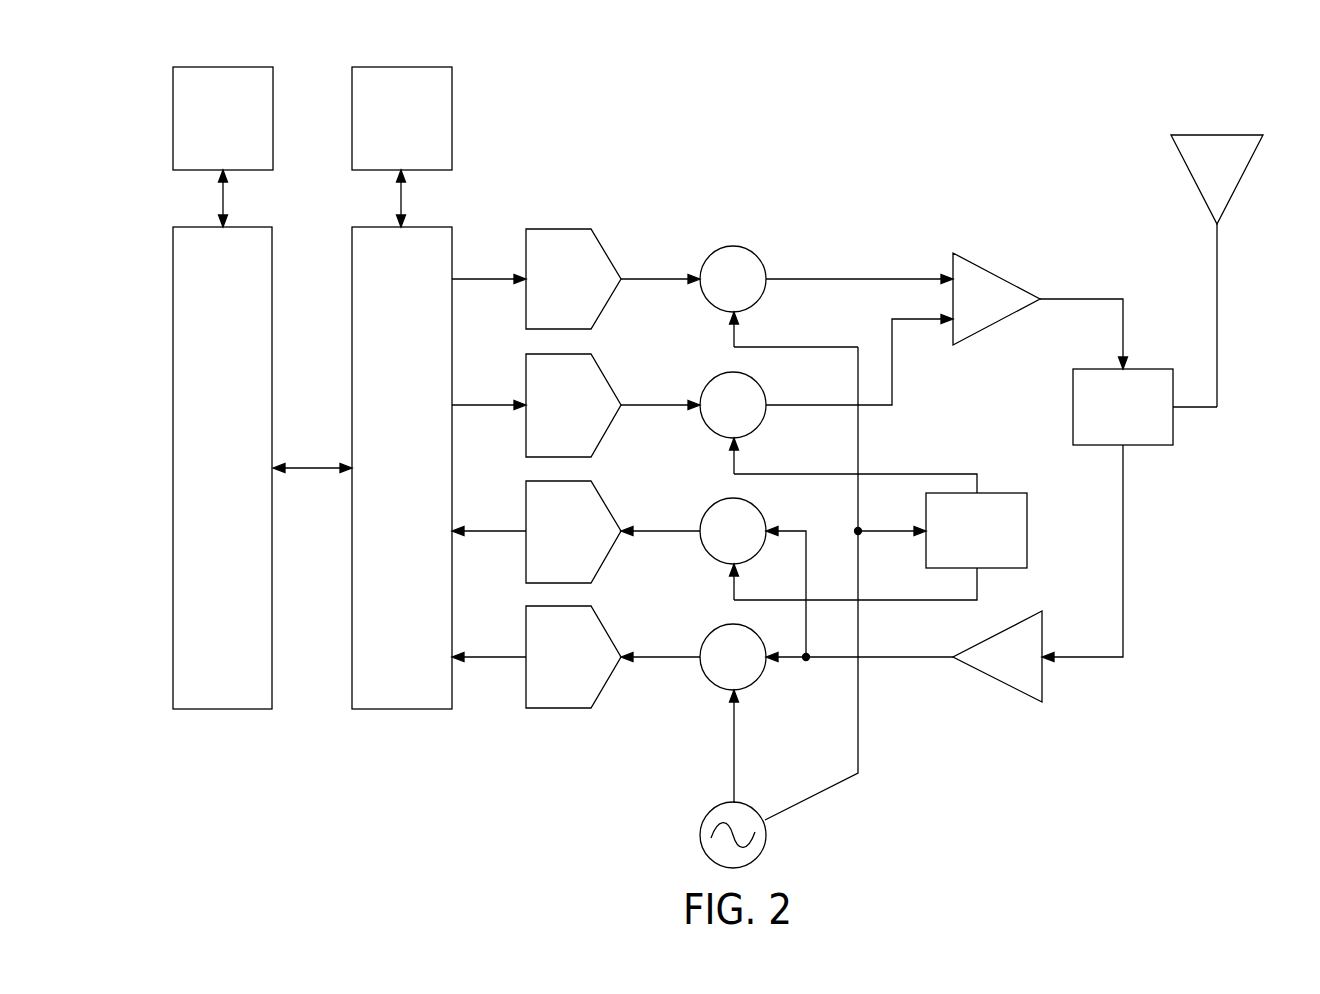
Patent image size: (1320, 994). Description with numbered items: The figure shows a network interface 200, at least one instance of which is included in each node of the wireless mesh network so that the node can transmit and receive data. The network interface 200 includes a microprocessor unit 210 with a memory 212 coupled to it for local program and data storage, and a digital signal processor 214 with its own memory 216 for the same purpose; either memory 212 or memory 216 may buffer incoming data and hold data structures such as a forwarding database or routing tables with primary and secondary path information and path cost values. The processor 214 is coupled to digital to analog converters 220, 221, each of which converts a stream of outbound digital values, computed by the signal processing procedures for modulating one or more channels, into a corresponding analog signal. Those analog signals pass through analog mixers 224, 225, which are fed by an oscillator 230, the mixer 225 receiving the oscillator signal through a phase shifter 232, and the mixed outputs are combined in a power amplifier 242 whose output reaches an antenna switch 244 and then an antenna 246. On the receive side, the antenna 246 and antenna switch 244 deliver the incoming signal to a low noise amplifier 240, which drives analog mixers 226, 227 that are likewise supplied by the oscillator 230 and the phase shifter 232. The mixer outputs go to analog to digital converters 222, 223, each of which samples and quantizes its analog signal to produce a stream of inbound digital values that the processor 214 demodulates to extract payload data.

The network interface 200 is at (1005, 112).
The microprocessor unit 210 is at (240, 497).
The memory 212 is at (240, 145).
The digital signal processor 214 is at (419, 497).
The memory 216 is at (419, 145).
The digital to analog converter 220 is at (582, 307).
The digital to analog converter 221 is at (582, 433).
The analog to digital converter 222 is at (582, 559).
The analog to digital converter 223 is at (582, 685).
The analog mixer 224 is at (716, 250).
The analog mixer 225 is at (716, 376).
The analog mixer 226 is at (716, 502).
The analog mixer 227 is at (716, 628).
The oscillator 230 is at (700, 835).
The phase shifter 232 is at (995, 546).
The low noise amplifier 240 is at (998, 682).
The power amplifier 242 is at (999, 276).
The antenna switch 244 is at (1141, 420).
The antenna 246 is at (1217, 135).